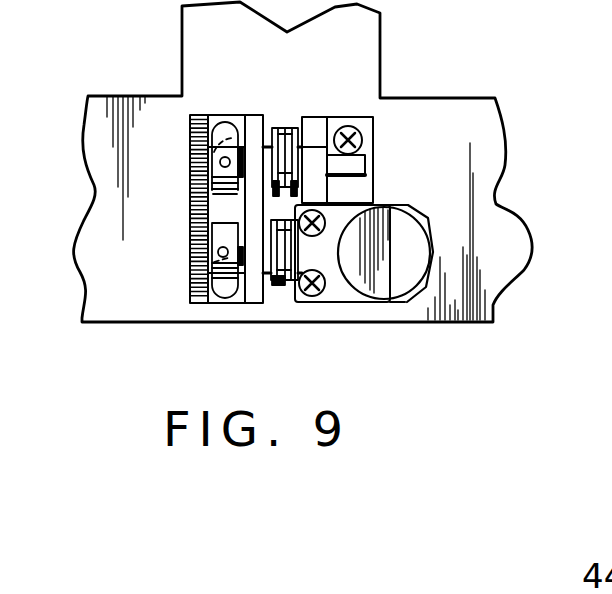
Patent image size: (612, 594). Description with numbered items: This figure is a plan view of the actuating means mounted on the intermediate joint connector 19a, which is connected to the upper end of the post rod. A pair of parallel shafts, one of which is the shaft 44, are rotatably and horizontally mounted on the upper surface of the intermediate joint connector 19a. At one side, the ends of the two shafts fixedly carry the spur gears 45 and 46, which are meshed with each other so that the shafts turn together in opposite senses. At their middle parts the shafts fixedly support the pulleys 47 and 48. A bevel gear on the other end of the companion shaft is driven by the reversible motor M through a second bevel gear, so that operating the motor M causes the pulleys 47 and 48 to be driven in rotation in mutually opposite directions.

The intermediate joint connector 19a is at (110, 217).
The shaft 44 is at (365, 162).
The spur gear 45 is at (188, 267).
The spur gear 46 is at (188, 153).
The pulley 47 is at (283, 287).
The pulley 48 is at (285, 128).
The reversible motor M is at (389, 288).